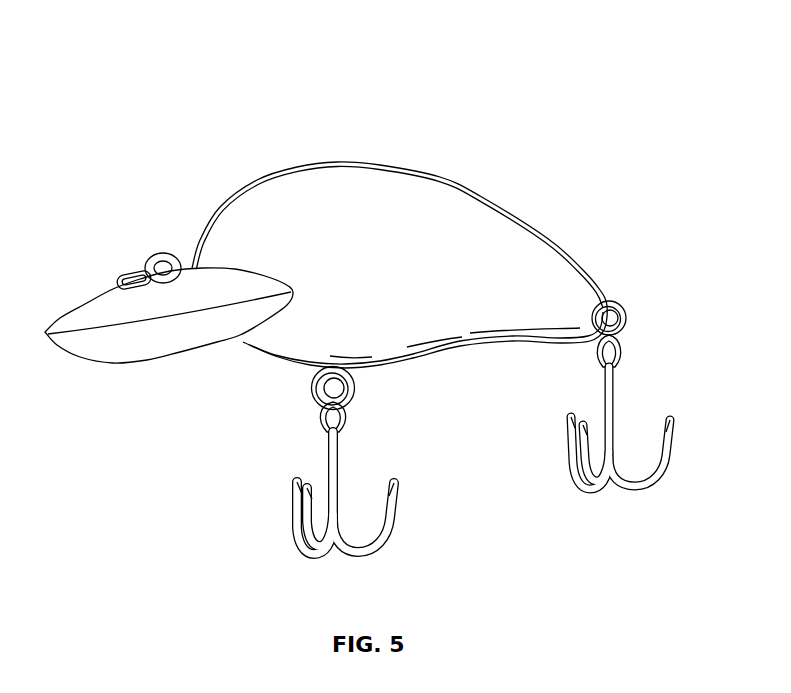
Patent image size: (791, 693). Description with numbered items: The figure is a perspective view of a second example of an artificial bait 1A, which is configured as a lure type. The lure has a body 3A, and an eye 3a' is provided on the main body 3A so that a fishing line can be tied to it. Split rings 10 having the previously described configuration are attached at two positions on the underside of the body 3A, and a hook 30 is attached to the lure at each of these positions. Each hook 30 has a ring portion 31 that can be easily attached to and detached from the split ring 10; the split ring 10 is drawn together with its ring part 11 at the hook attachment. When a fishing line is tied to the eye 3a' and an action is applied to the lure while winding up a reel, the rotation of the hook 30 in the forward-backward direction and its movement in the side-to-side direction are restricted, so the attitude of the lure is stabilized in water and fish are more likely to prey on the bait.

The artificial bait 1A is at (453, 93).
The body 3A is at (482, 229).
The eye 3a' is at (169, 281).
The split ring 10 is at (305, 403).
The split ring 11 is at (355, 389).
The ring portion 31 is at (344, 427).
The hook 30 is at (366, 549).